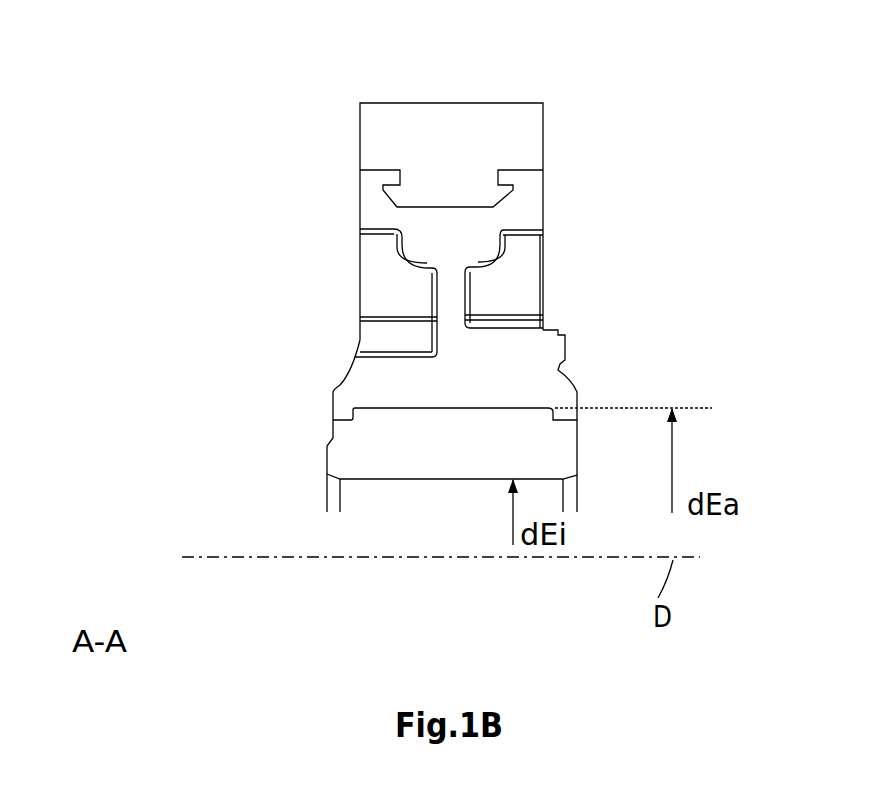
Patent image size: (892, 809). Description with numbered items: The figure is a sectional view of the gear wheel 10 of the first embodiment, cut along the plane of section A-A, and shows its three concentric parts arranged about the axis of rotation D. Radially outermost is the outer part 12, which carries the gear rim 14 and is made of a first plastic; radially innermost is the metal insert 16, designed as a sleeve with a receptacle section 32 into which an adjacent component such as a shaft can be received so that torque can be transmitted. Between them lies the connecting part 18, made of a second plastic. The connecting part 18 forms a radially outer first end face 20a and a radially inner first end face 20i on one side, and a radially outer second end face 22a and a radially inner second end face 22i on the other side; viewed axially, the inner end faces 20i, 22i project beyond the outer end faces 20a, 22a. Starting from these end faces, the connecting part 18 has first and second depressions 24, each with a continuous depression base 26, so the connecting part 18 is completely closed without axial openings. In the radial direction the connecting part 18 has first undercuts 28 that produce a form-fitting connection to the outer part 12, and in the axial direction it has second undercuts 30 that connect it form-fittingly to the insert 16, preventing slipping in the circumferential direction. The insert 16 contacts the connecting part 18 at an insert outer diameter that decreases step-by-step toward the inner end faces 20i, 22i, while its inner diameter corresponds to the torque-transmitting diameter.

The gear wheel 10 is at (213, 147).
The outer part 12 is at (451, 97).
The gear rim 14 is at (457, 102).
The insert 16 is at (423, 447).
The connecting part 18 is at (392, 377).
The radially outer first end face 20a is at (360, 118).
The radially inner first end face 20i is at (333, 427).
The radially outer second end face 22a is at (545, 122).
The radially inner second end face 22i is at (577, 436).
The depression 24 is at (578, 242).
The depression base 26 is at (430, 308).
The first undercuts 28 is at (348, 162).
The second undercuts 30 is at (347, 438).
The receptacle section 32 is at (463, 480).